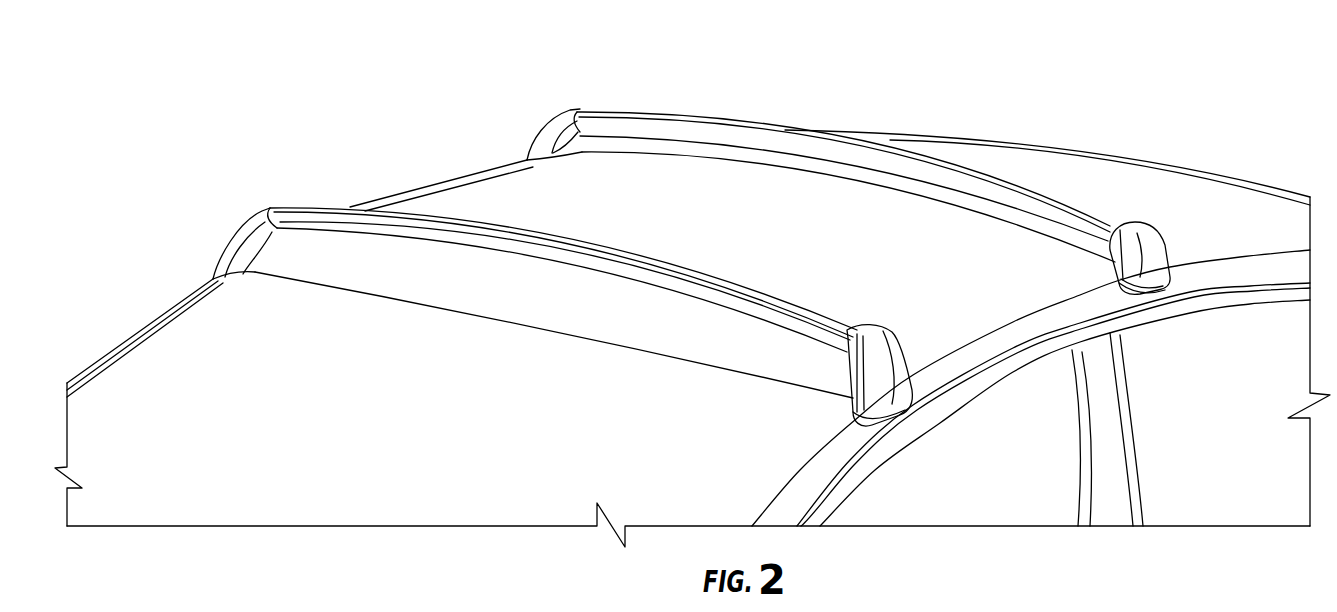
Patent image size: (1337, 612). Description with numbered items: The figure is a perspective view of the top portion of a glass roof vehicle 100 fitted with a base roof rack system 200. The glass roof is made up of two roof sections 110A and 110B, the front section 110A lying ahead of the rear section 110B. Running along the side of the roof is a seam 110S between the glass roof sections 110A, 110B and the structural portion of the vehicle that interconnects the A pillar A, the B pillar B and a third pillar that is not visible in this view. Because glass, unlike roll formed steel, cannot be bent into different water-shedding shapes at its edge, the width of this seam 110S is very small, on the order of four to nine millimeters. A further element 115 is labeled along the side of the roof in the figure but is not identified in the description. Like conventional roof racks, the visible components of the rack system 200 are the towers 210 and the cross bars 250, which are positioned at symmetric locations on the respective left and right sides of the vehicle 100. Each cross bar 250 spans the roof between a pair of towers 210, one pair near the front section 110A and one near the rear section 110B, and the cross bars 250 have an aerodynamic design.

The glass roof vehicle 100 is at (171, 284).
The roof section 110A is at (828, 229).
The roof section 110B is at (1163, 201).
The seam 110S is at (470, 178).
The roof ditch molding 115 is at (1013, 356).
The base roof rack system 200 is at (726, 250).
The towers 210 is at (897, 380).
The cross bars 250 is at (577, 243).
The A pillar A is at (824, 492).
The B pillar B is at (1118, 465).